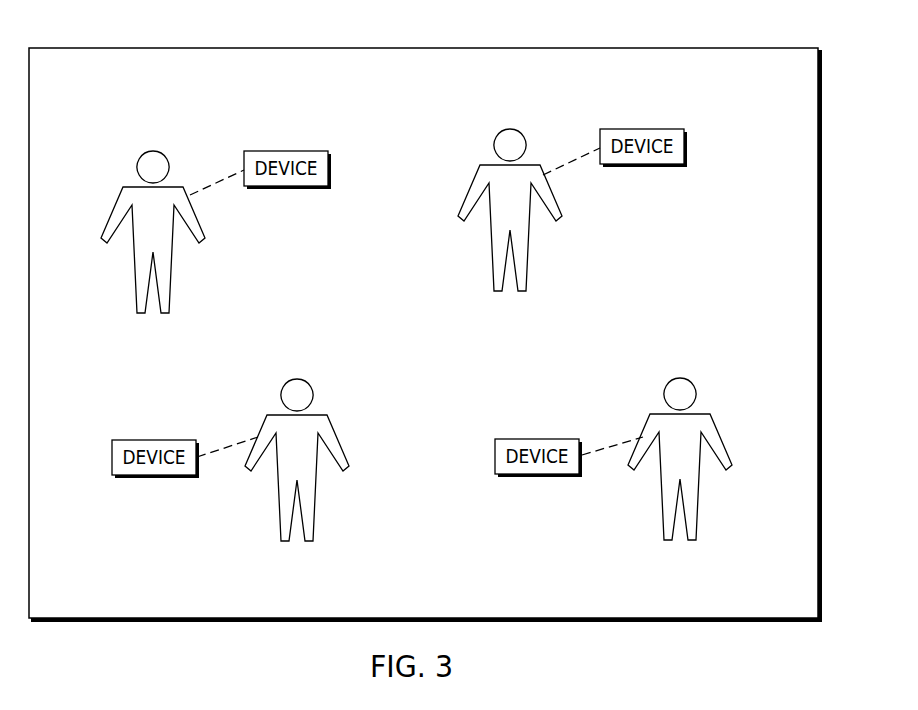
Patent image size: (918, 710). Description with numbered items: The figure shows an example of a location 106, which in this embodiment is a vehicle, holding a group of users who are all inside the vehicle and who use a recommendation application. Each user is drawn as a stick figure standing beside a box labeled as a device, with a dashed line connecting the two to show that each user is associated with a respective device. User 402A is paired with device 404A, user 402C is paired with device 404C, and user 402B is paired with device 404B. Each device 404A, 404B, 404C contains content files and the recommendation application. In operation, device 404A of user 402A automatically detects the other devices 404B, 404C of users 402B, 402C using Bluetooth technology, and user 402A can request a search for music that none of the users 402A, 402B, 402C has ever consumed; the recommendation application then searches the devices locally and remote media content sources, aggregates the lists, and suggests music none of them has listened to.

The location 106 is at (110, 48).
The user 402A is at (152, 151).
The user 402B is at (294, 379).
The user 402C is at (509, 129).
The device 404A is at (288, 151).
The device 404B is at (154, 440).
The device 404C is at (645, 129).